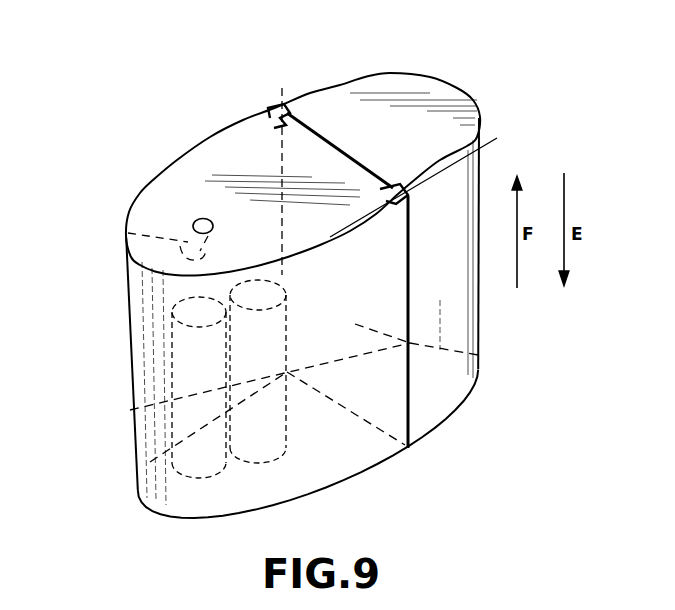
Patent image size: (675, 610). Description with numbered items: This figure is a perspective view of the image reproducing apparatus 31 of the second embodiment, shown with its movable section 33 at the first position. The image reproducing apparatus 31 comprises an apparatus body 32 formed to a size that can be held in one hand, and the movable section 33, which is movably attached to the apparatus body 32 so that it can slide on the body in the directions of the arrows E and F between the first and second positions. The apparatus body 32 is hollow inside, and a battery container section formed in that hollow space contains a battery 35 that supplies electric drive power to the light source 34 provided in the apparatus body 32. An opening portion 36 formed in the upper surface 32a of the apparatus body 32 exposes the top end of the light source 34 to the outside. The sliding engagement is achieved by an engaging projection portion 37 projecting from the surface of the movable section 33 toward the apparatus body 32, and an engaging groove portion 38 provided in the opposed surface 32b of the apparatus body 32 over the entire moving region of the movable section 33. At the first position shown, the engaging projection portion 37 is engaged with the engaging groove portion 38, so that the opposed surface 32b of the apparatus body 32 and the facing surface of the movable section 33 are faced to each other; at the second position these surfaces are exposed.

The image reproducing apparatus 31 is at (194, 56).
The apparatus body 32 is at (360, 457).
The upper surface 32a is at (163, 190).
The opposed surface 32b is at (410, 352).
The movable section 33 is at (472, 336).
The light source 34 is at (128, 233).
The battery 35 is at (130, 410).
The opening portion 36 is at (207, 218).
The engaging projection portion 37 is at (395, 169).
The engaging groove portion 38 is at (267, 118).